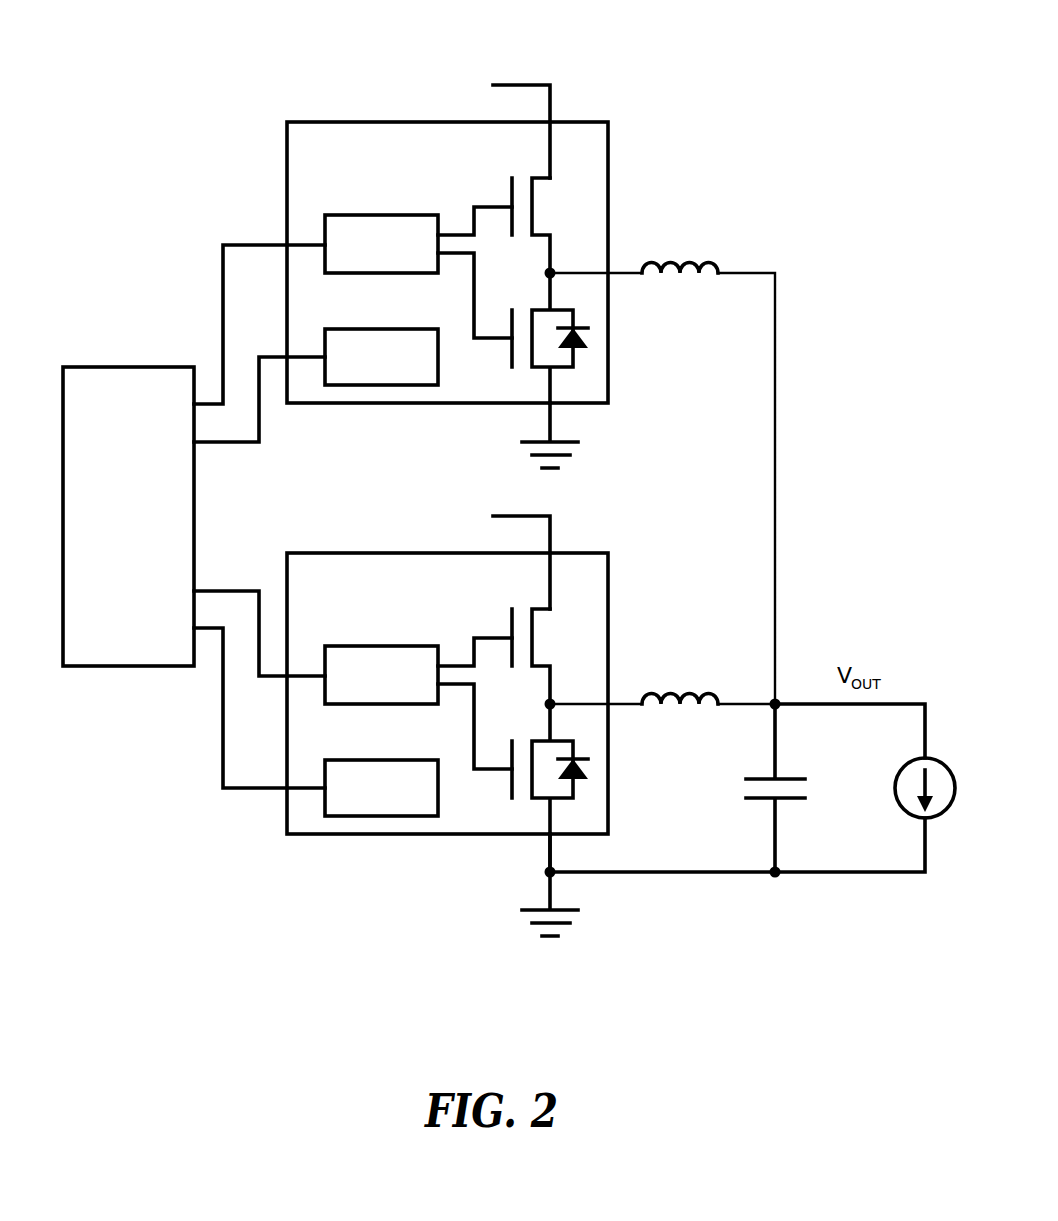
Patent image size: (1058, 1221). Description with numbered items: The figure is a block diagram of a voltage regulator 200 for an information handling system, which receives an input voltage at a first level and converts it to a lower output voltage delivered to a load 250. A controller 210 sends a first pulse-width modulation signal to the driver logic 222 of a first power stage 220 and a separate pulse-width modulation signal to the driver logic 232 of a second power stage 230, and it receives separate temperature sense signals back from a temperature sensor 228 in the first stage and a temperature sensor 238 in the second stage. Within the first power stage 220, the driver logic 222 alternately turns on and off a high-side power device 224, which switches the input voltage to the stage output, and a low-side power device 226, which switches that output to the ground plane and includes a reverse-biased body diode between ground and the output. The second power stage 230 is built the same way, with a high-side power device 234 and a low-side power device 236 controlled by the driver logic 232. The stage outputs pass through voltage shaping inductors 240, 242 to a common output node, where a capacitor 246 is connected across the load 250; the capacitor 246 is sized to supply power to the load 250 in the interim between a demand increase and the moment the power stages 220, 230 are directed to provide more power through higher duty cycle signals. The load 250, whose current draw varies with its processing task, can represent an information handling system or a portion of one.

The voltage regulator 200 is at (208, 977).
The controller 210 is at (82, 367).
The first power stage 220 is at (438, 237).
The driver logic 222 is at (343, 215).
The high-side power device 224 is at (538, 178).
The low-side power device 226 is at (540, 310).
The temperature sensor 228 is at (343, 329).
The second power stage 230 is at (438, 668).
The driver logic 232 is at (343, 646).
The high-side power device 234 is at (538, 609).
The low-side power device 236 is at (540, 741).
The temperature sensor 238 is at (343, 760).
The inductor 240 is at (671, 254).
The inductor 242 is at (671, 685).
The capacitor 246 is at (757, 777).
The load 250 is at (904, 763).